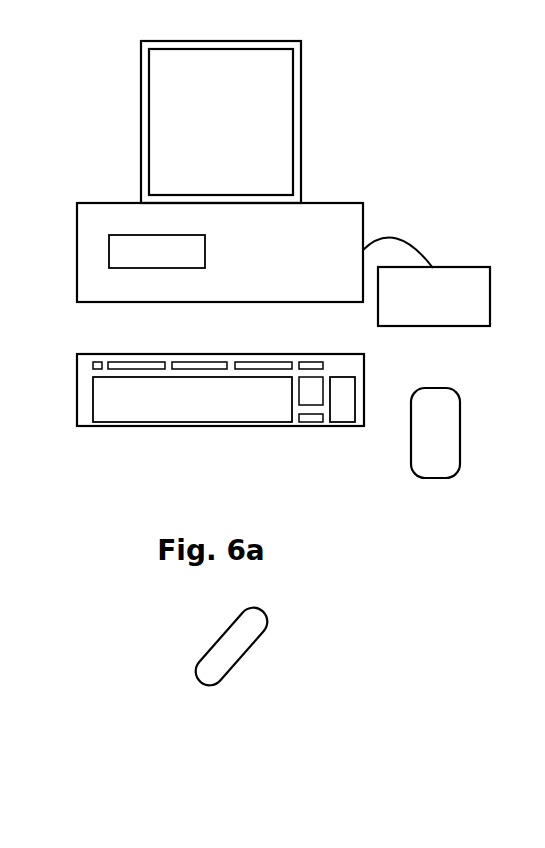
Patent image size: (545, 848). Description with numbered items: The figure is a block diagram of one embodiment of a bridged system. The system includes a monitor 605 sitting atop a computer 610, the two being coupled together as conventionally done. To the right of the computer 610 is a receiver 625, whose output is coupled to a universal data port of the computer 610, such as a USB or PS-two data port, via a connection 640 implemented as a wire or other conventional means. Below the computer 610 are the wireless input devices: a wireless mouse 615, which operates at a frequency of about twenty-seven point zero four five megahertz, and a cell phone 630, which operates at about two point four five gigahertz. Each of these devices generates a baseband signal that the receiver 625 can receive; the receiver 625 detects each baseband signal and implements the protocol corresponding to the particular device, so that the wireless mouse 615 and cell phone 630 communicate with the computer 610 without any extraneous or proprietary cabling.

The monitor 605 is at (221, 122).
The computer 610 is at (220, 252).
The receiver 625 is at (434, 296).
The connection 640 is at (290, 331).
The wireless mouse 615 is at (435, 433).
The cell phone 630 is at (214, 675).